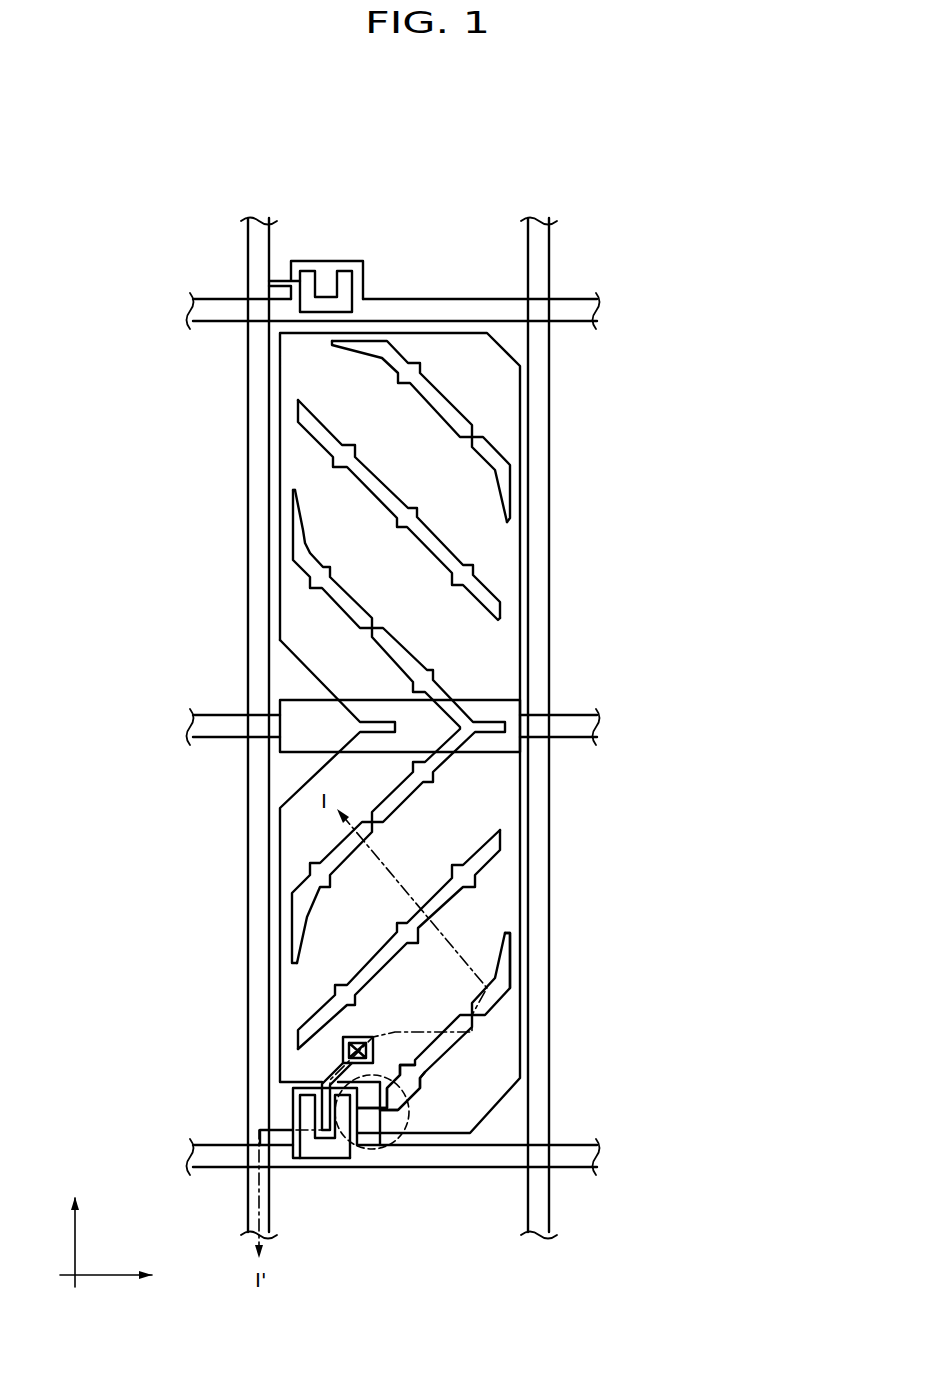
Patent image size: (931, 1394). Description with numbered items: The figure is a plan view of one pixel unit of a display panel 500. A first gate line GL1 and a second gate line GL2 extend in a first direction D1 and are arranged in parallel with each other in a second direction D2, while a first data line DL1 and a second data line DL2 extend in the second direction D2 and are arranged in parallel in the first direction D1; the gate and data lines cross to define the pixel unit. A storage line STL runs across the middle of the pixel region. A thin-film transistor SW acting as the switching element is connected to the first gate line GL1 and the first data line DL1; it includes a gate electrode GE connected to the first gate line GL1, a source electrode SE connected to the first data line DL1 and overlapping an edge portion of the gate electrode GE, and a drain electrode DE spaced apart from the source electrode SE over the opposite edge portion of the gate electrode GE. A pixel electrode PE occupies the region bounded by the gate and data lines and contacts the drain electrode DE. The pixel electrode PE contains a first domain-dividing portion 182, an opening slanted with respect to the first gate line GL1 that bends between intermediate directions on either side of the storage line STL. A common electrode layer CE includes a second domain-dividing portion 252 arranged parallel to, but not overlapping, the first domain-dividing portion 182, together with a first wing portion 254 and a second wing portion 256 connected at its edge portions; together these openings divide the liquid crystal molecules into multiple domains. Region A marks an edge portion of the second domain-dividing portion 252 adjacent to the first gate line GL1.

The display panel 500 is at (421, 189).
The first data line DL1 is at (248, 234).
The second data line DL2 is at (552, 243).
The first gate line GL1 is at (577, 1168).
The second gate line GL2 is at (578, 323).
The storage line STL is at (578, 753).
The pixel electrode PE is at (450, 733).
The common electrode layer CE is at (489, 1010).
The first domain-dividing portion 182 is at (435, 902).
The second domain-dividing portion 252 is at (406, 1072).
The first wing portion 254 is at (388, 1130).
The second wing portion 256 is at (503, 950).
The region A is at (416, 1144).
The thin-film transistor SW is at (316, 1147).
The gate electrode GE is at (294, 1160).
The source electrode SE is at (319, 1150).
The drain electrode DE is at (339, 1140).
The first direction D1 is at (122, 1276).
The second direction D2 is at (78, 1227).